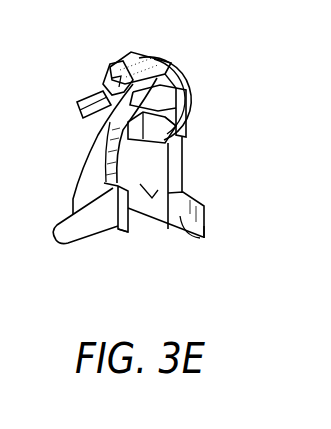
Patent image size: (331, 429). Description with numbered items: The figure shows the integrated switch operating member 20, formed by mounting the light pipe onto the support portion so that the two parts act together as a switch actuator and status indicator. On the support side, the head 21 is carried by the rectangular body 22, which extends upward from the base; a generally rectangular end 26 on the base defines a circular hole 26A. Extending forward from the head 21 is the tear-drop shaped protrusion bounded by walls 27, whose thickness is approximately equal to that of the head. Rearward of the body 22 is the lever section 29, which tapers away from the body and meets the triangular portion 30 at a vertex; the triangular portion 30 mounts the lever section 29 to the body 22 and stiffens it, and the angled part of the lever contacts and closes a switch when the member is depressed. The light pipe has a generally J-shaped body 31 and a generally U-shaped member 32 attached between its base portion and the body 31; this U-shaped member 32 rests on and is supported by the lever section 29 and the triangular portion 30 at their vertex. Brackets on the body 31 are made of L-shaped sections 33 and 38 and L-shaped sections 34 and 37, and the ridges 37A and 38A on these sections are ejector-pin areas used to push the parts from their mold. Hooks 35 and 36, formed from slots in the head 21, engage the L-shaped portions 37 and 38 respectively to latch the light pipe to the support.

The switch operating member 20 is at (246, 62).
The head 21 is at (166, 66).
The rectangular body 22 is at (170, 191).
The rectangular end 26 is at (178, 231).
The circular hole 26A is at (205, 237).
The walls 27 is at (186, 116).
The lever section 29 is at (85, 240).
The triangular portion 30 is at (147, 193).
The body 31 is at (92, 155).
The U-shaped member 32 is at (118, 231).
The L-shaped section 33 is at (176, 150).
The L-shaped section 34 is at (91, 114).
The projecting hook 35 is at (105, 79).
The projecting hook 36 is at (180, 142).
The L-shaped section 37 is at (108, 78).
The ridge 37A is at (118, 78).
The L-shaped section 38 is at (187, 100).
The ridge 38A is at (183, 78).